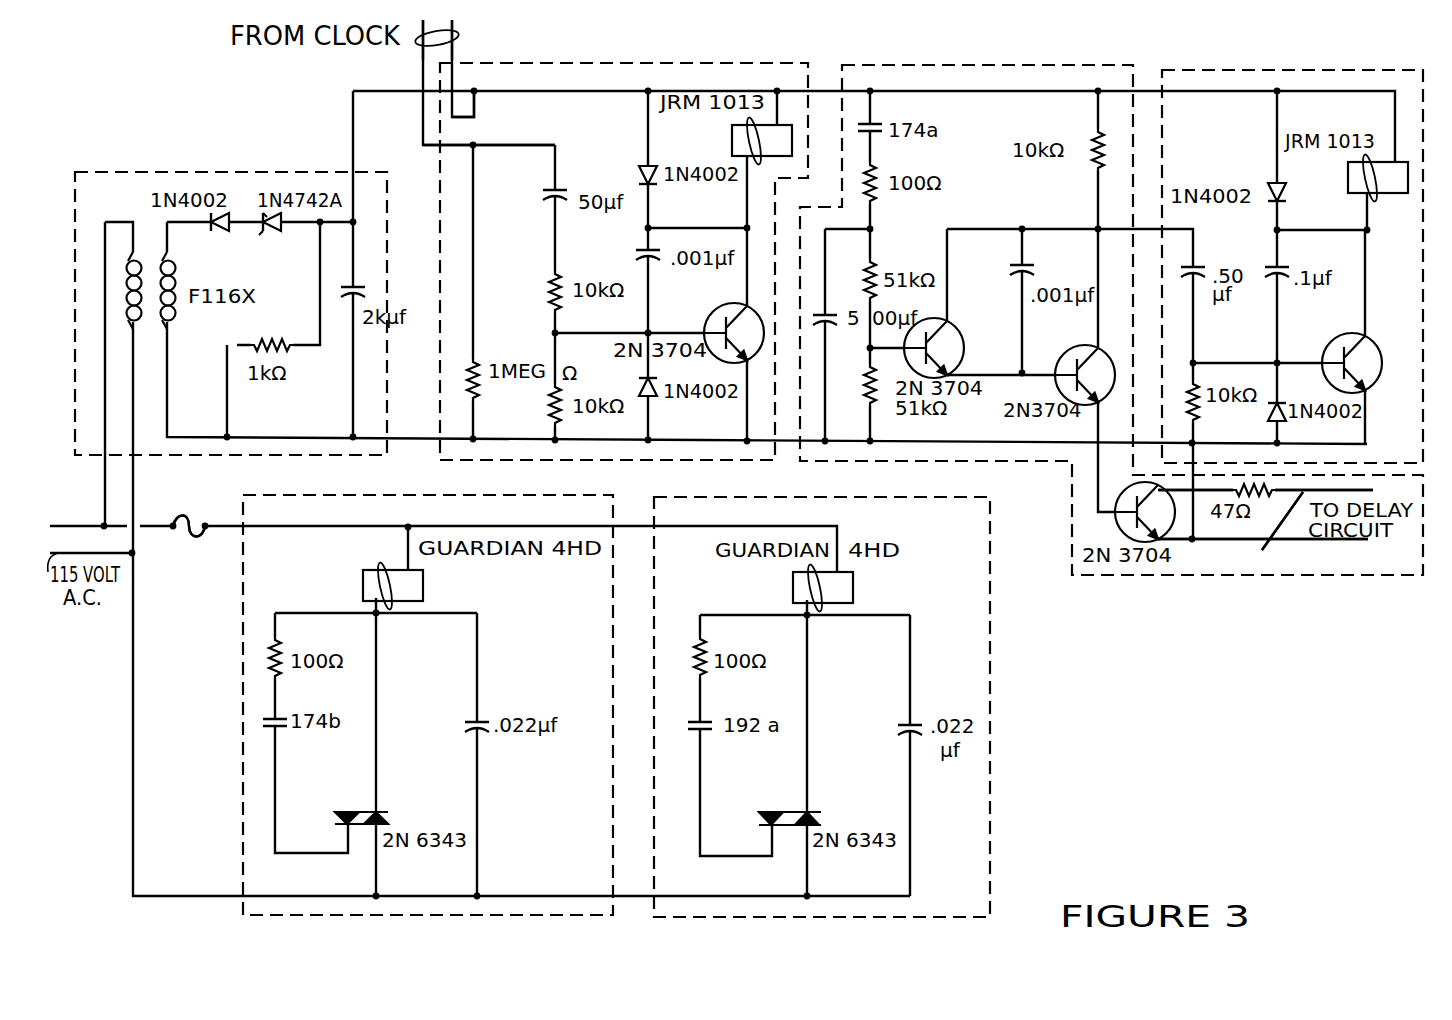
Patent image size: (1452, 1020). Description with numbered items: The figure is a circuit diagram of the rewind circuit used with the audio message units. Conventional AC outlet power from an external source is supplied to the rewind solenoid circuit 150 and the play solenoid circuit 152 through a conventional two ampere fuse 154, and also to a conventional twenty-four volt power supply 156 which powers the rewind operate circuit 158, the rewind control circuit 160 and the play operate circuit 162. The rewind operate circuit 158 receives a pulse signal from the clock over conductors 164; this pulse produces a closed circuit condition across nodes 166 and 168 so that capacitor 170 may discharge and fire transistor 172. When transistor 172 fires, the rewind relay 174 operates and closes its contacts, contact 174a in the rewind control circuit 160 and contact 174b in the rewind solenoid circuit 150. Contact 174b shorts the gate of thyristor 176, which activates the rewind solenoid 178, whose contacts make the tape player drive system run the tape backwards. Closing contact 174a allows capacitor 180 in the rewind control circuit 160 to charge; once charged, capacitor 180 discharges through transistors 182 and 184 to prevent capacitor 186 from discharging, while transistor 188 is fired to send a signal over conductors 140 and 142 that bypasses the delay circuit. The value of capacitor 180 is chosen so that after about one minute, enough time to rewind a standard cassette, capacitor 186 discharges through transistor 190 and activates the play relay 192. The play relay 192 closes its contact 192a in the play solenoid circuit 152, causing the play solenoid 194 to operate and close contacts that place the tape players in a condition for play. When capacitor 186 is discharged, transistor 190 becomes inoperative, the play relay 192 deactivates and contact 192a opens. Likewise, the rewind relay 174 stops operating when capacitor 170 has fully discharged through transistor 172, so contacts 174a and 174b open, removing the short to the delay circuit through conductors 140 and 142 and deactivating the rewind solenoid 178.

The conductor 140 is at (1270, 545).
The conductor 142 is at (1348, 543).
The rewind solenoid circuit 150 is at (500, 496).
The play solenoid circuit 152 is at (848, 498).
The fuse 154 is at (176, 536).
The power supply 156 is at (167, 173).
The rewind operate circuit 158 is at (645, 64).
The rewind control circuit 160 is at (1020, 66).
The play operate circuit 162 is at (1305, 71).
The conductors 164 is at (459, 39).
The node 166 is at (475, 148).
The node 168 is at (477, 96).
The capacitor 170 is at (548, 200).
The transistor 172 is at (709, 318).
The rewind relay 174 is at (732, 141).
The contact 174a is at (870, 127).
The contact 174b is at (275, 722).
The thyristor 176 is at (378, 811).
The rewind solenoid 178 is at (458, 568).
The capacitor 180 is at (827, 315).
The transistor 182 is at (958, 326).
The transistor 184 is at (1080, 347).
The capacitor 186 is at (1196, 265).
The transistor 188 is at (1122, 538).
The transistor 190 is at (1345, 338).
The play relay 192 is at (1348, 169).
The contact 192a is at (700, 725).
The play solenoid 194 is at (880, 572).